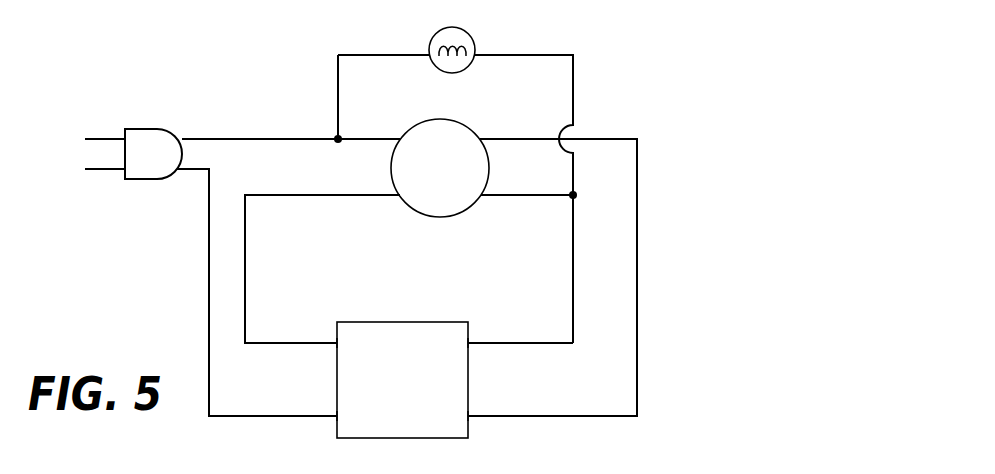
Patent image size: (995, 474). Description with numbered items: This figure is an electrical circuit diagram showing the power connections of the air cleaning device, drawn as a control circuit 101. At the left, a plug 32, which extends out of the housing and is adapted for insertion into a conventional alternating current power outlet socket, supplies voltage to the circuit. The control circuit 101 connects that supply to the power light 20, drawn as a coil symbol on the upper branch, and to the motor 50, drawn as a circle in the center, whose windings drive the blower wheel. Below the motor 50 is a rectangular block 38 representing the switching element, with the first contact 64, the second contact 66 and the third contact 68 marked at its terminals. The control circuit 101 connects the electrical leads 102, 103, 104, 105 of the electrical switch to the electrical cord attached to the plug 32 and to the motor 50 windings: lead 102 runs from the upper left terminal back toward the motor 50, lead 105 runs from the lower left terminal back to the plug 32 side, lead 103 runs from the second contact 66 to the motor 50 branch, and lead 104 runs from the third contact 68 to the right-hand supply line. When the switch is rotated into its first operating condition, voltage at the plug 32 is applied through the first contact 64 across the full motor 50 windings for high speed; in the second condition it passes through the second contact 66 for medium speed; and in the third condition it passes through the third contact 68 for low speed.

The control circuit 101 is at (250, 68).
The power light 20 is at (473, 37).
The plug 32 is at (151, 180).
The motor 50 is at (451, 181).
The controller 38 is at (412, 389).
The first contact 64 is at (349, 382).
The second contact 66 is at (455, 344).
The third contact 68 is at (455, 420).
The electrical lead 102 is at (275, 343).
The electrical lead 103 is at (494, 343).
The electrical lead 104 is at (494, 416).
The electrical lead 105 is at (306, 416).